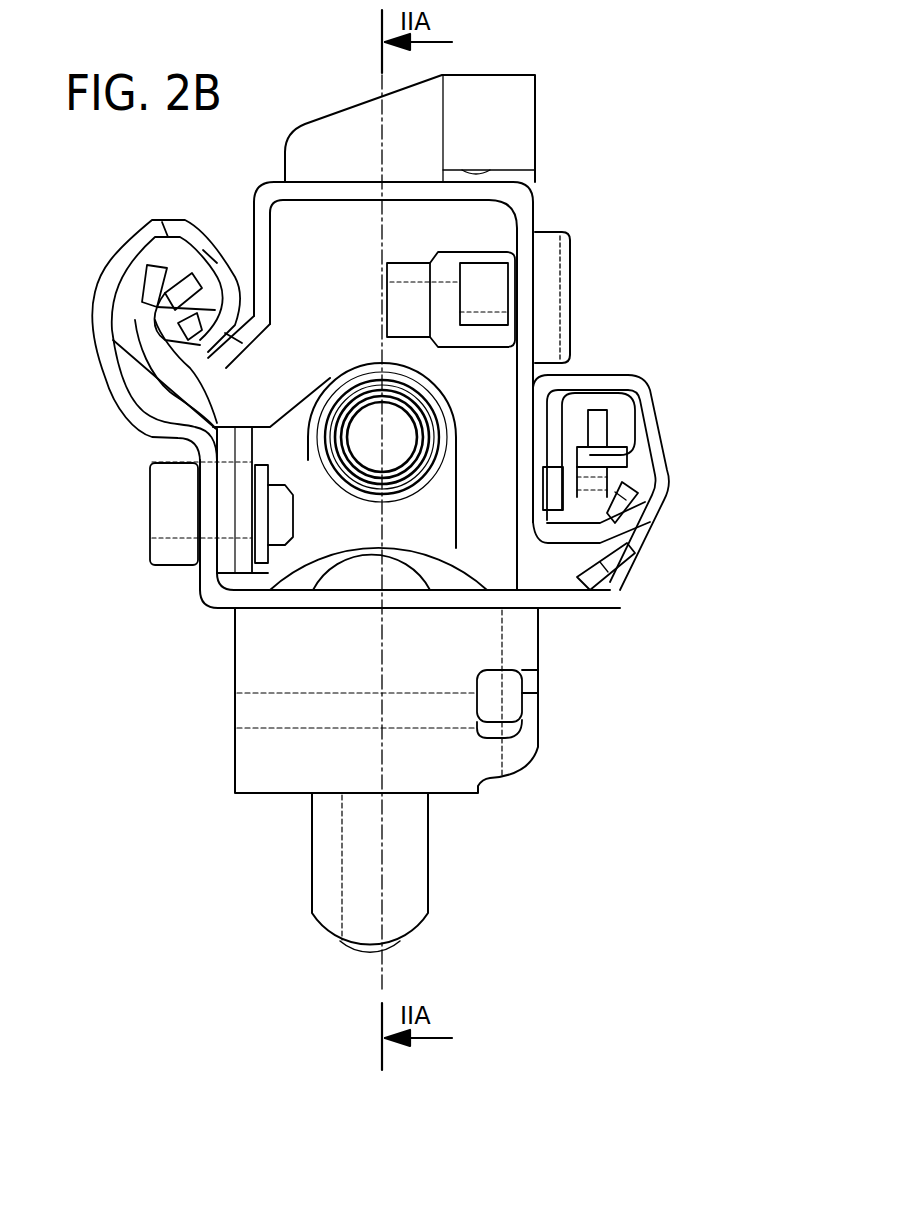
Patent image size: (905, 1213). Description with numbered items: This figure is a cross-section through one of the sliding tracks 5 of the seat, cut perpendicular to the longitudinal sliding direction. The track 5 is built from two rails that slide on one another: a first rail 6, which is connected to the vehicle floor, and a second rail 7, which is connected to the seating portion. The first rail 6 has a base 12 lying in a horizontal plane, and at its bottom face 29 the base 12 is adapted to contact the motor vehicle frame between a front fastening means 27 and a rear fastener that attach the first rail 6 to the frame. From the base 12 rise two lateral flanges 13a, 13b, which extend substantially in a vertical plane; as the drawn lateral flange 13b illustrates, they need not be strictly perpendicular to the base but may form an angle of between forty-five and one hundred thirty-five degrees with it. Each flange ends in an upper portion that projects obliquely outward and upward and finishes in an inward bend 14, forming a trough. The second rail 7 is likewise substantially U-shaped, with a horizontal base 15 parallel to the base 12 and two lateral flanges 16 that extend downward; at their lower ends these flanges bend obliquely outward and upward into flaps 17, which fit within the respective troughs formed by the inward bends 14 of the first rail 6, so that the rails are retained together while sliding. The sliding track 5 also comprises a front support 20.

The track 5 is at (733, 249).
The first rail 6 is at (617, 594).
The second rail 7 is at (523, 210).
The base 12 is at (282, 598).
The lateral flange 13a is at (210, 505).
The lateral flange 13b is at (663, 487).
The inward bend 14 is at (213, 310).
The base 15 is at (345, 190).
The lateral flange 16 is at (522, 313).
The flap 17 is at (172, 352).
The front support 20 is at (317, 520).
The front fastening means 27 is at (427, 767).
The bottom face 29 is at (473, 612).